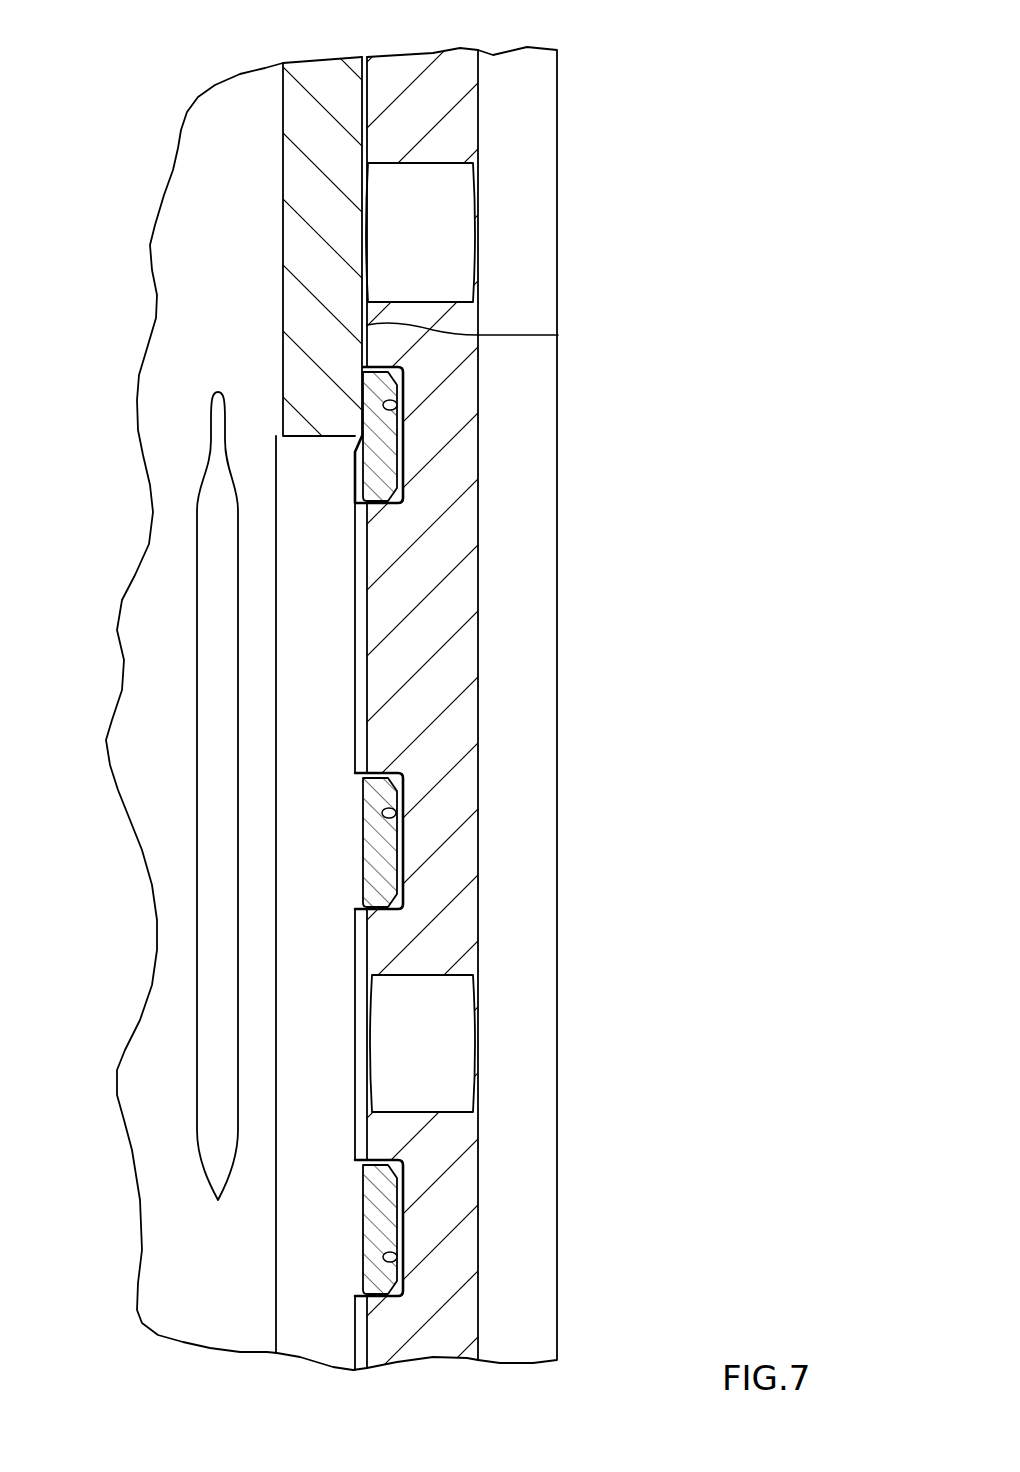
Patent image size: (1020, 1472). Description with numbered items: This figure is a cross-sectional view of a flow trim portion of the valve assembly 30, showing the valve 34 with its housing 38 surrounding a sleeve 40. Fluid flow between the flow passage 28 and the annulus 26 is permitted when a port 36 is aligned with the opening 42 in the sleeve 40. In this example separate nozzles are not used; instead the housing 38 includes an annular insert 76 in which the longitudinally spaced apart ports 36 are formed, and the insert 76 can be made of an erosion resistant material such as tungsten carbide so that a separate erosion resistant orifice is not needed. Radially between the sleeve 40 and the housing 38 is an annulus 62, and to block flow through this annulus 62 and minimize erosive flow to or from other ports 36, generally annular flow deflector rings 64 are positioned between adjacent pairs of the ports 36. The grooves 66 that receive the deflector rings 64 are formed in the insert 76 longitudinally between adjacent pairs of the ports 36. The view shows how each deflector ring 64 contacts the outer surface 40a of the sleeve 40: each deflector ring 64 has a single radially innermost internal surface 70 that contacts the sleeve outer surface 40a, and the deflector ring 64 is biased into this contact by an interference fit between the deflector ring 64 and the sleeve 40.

The annulus 26 is at (728, 580).
The flow passage 28 is at (180, 270).
The valve assembly 30 is at (732, 82).
The valve 34 is at (564, 1100).
The port 36 is at (455, 227).
The housing 38 is at (558, 105).
The sleeve 40 is at (283, 150).
The outer surface 40a is at (558, 335).
The opening 42 is at (300, 463).
The annulus 62 is at (360, 633).
The deflector ring 64 is at (403, 445).
The groove 66 is at (397, 405).
The internal surface 70 is at (350, 463).
The annular insert 76 is at (478, 715).